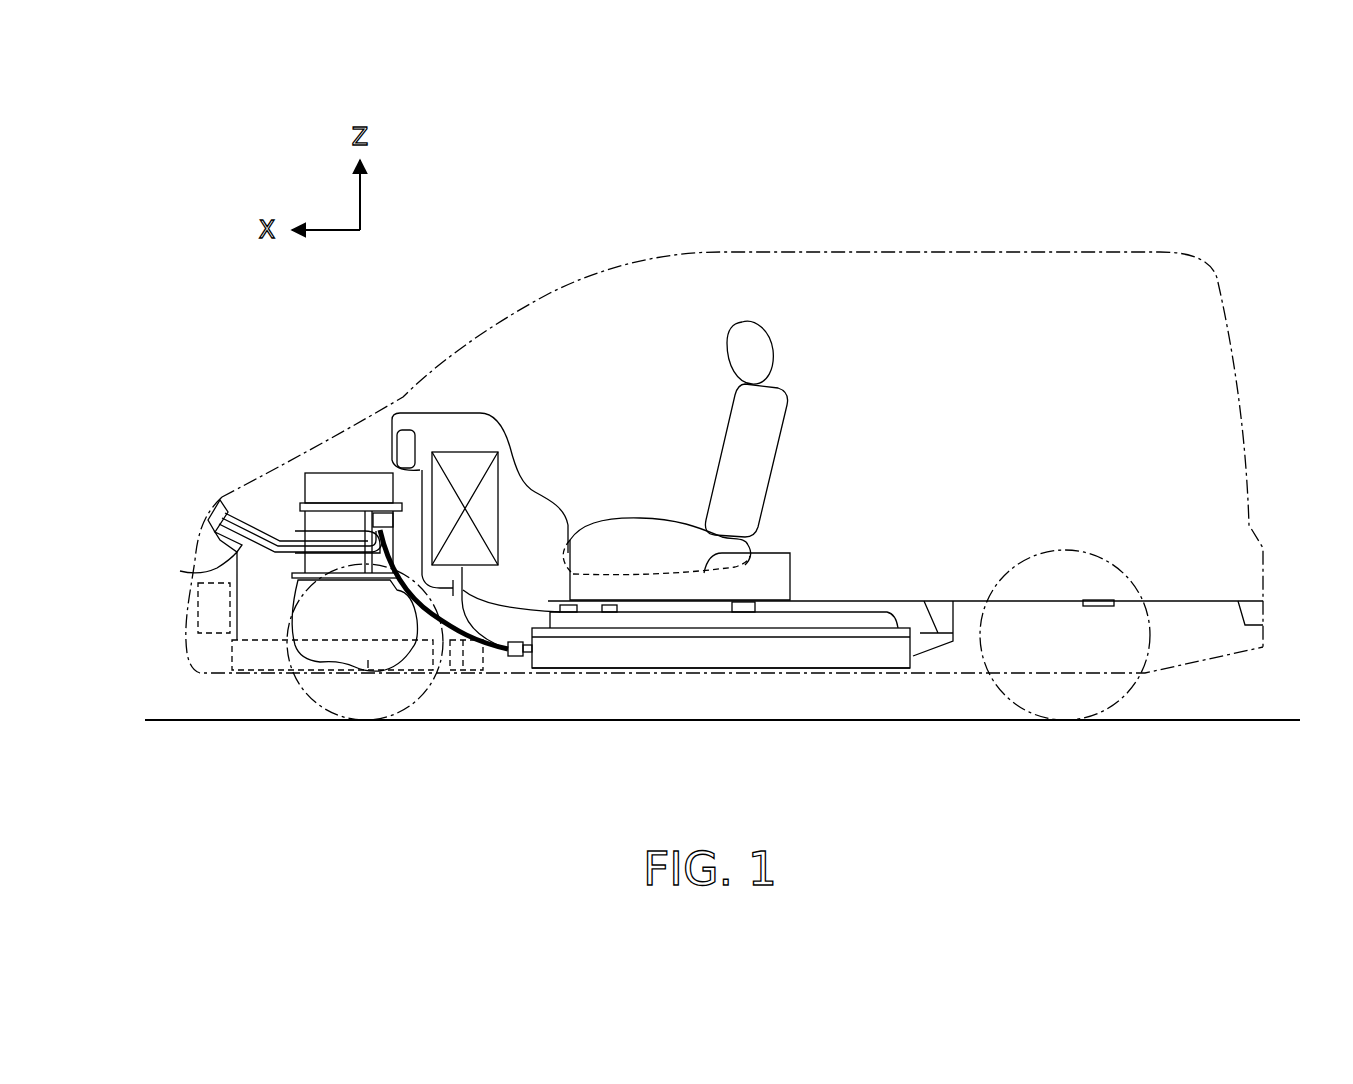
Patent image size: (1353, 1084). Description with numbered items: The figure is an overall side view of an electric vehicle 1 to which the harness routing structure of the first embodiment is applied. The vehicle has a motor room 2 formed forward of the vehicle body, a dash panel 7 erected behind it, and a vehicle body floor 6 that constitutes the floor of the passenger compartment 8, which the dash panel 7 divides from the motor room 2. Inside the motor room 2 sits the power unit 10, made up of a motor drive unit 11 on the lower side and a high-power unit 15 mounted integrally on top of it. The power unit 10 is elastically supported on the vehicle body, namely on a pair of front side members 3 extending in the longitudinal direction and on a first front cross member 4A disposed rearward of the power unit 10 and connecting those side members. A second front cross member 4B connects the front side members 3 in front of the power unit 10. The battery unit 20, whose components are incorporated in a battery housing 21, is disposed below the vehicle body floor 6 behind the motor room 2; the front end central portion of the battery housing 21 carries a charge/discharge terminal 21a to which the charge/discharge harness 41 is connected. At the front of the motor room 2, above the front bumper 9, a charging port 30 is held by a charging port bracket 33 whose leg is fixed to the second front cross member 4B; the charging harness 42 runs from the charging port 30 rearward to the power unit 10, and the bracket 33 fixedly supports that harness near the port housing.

The electric vehicle 1 is at (520, 276).
The motor room 2 is at (223, 507).
The front side member 3 is at (370, 660).
The first front cross member 4A is at (465, 577).
The second front cross member 4B is at (262, 640).
The vehicle body floor 6 is at (900, 600).
The dash panel 7 is at (420, 470).
The passenger compartment 8 is at (859, 385).
The front bumper 9 is at (196, 612).
The power unit 10 is at (243, 357).
The motor drive unit 11 is at (351, 608).
The high-power unit 15 is at (345, 474).
The battery unit 20 is at (759, 660).
The battery housing 21 is at (700, 670).
The charge/discharge terminal 21a is at (528, 658).
The charging port 30 is at (201, 506).
The charging port bracket 33 is at (200, 572).
The charge/discharge harness 41 is at (453, 596).
The charging harness 42 is at (280, 550).